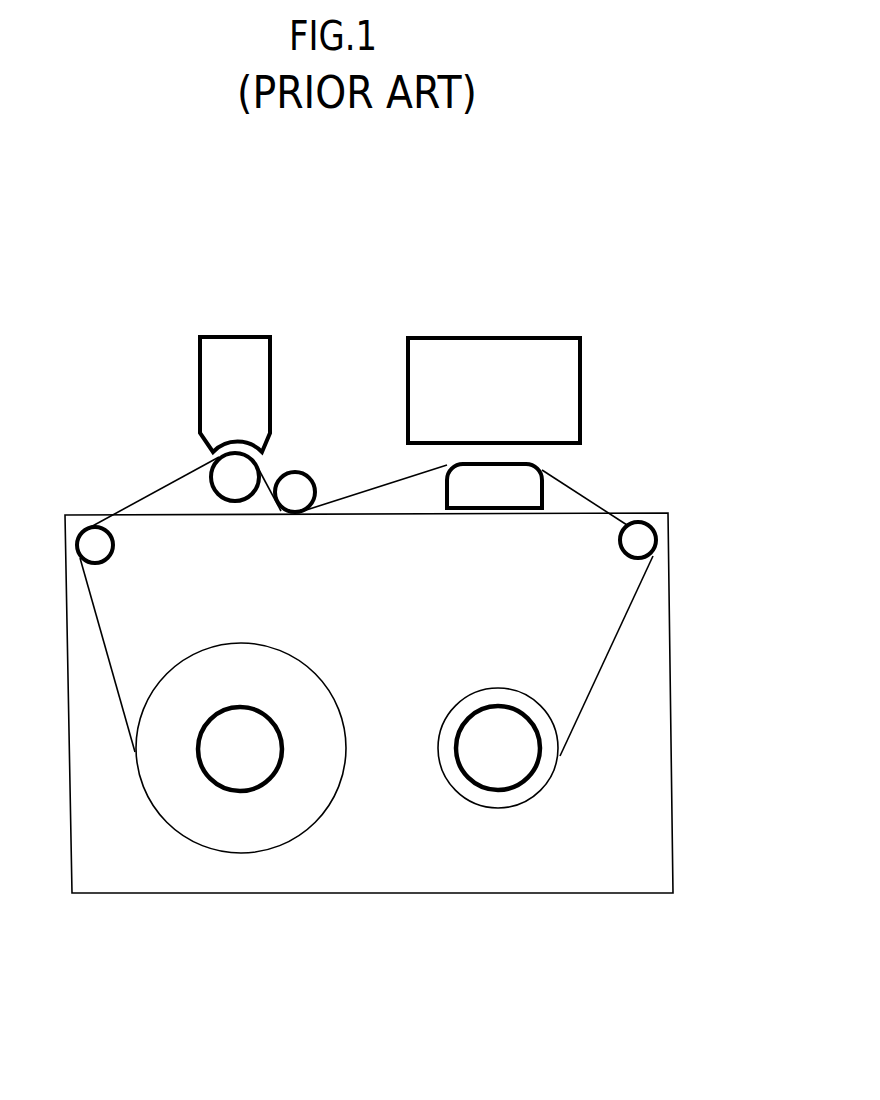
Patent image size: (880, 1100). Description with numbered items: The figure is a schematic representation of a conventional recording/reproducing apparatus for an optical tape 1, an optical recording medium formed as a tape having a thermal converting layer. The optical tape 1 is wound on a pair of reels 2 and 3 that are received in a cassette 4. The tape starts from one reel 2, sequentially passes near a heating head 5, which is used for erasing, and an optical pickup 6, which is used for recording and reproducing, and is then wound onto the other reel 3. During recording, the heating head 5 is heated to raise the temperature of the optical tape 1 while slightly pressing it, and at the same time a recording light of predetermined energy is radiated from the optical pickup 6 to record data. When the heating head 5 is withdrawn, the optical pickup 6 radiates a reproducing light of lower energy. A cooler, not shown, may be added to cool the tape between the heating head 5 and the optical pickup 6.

The optical tape 1 is at (103, 647).
The reel 2 is at (245, 783).
The reel 3 is at (505, 787).
The cassette 4 is at (672, 748).
The heating head 5 is at (242, 345).
The optical pickup 6 is at (482, 340).